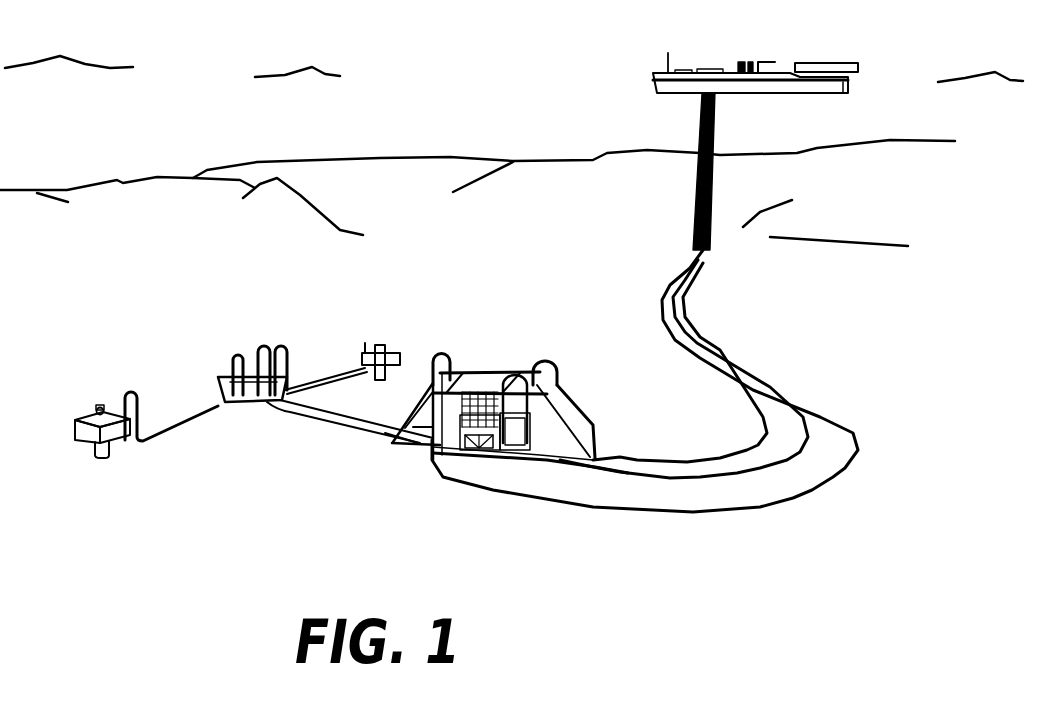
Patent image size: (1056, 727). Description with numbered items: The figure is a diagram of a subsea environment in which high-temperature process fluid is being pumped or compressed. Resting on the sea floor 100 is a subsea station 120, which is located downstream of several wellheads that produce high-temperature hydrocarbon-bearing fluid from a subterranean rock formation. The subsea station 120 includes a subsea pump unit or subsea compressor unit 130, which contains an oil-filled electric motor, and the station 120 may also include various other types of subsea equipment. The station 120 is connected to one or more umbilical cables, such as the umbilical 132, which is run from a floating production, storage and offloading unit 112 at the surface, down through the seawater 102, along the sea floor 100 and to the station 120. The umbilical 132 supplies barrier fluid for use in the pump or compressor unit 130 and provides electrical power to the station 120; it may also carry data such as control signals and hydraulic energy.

The sea floor 100 is at (863, 336).
The seawater 102 is at (463, 134).
The floating production, storage and offloading unit (FPSO) 112 is at (860, 67).
The subsea station 120 is at (499, 402).
The subsea pump unit or subsea compressor unit 130 is at (452, 446).
The umbilical 132 is at (690, 512).